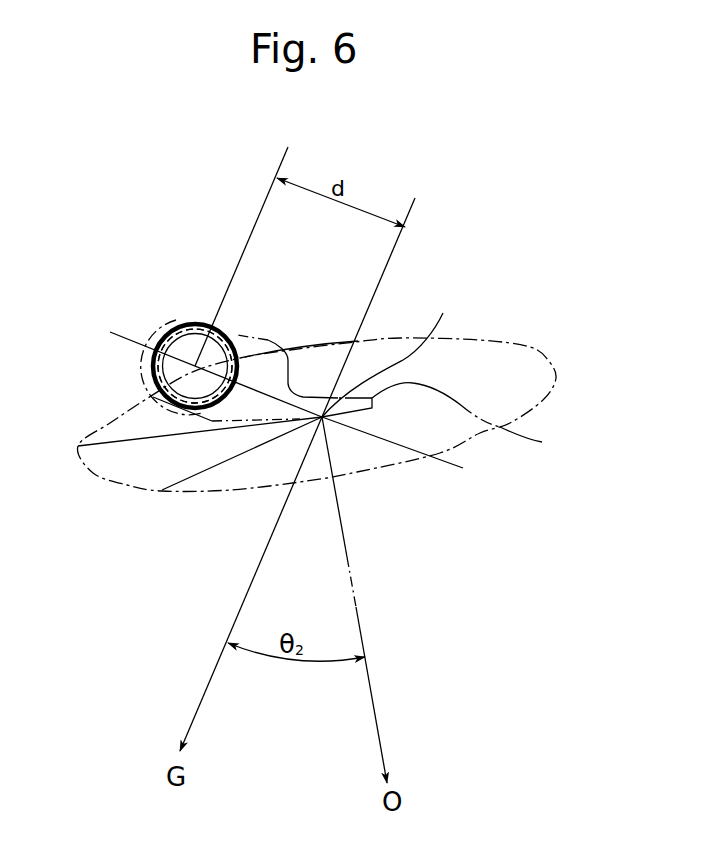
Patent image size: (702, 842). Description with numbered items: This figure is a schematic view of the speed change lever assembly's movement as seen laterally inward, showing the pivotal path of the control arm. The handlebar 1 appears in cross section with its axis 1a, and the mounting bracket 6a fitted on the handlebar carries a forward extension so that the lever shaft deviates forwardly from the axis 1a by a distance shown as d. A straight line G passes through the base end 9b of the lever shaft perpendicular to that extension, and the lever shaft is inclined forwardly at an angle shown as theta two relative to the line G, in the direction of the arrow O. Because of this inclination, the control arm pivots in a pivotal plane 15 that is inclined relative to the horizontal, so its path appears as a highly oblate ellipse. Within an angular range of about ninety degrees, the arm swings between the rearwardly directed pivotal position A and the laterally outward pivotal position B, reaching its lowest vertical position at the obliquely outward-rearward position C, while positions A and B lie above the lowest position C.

The handlebar 1 is at (236, 345).
The axis of the handlebar 1a is at (195, 358).
The mounting bracket 6a is at (272, 339).
The base end of the lever shaft 9b is at (391, 351).
The pivotal plane 15 is at (513, 371).
The pivotal position A is at (78, 446).
The pivotal position B is at (357, 472).
The position C is at (162, 490).